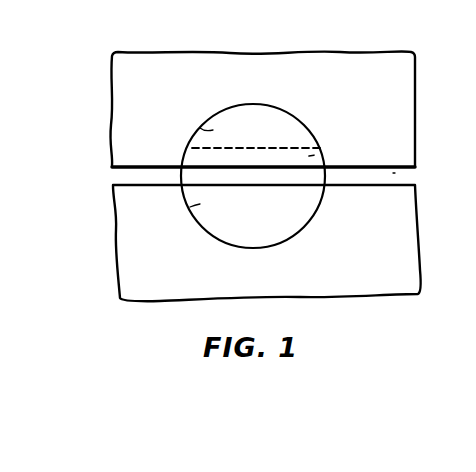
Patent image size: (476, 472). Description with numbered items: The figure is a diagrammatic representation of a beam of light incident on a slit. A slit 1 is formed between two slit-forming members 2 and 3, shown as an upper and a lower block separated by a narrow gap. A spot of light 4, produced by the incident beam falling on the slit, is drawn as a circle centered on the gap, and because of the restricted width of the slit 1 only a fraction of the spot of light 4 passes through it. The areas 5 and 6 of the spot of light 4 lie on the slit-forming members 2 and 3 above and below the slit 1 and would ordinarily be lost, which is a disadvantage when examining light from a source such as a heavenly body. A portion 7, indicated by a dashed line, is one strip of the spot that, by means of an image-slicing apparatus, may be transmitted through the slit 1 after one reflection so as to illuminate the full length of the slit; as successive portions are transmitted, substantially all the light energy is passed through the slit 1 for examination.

The slit 1 is at (393, 173).
The slit-forming member 2 is at (262, 109).
The slit-forming member 3 is at (267, 243).
The spot of light 4 is at (299, 118).
The area of the spot of light 5 is at (213, 130).
The area of the spot of light 6 is at (200, 204).
The portion of the spot of light 7 is at (322, 147).